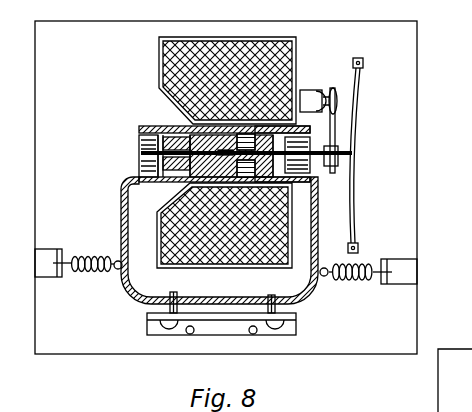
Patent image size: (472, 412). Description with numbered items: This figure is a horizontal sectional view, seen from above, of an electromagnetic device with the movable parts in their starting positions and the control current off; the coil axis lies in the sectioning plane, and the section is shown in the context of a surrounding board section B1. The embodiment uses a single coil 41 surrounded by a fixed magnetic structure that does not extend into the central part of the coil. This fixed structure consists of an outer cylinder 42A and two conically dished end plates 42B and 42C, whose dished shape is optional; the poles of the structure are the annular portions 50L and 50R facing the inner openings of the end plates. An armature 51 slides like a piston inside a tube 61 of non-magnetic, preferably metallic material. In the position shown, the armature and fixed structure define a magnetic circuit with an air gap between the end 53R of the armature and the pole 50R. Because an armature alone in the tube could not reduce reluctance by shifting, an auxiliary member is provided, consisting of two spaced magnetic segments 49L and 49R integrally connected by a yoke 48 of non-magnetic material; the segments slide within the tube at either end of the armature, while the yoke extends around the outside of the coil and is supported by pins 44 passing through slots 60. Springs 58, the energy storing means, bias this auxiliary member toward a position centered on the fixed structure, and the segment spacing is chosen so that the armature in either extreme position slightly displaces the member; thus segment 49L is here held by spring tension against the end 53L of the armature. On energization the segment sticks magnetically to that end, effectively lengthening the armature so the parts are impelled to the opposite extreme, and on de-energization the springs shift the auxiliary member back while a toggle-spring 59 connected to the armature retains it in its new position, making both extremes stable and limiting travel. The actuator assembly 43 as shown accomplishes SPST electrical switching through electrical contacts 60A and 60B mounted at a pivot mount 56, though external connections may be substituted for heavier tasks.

The coil 41 is at (226, 148).
The outer cylinder 42A is at (263, 38).
The dished end plate 42B is at (158, 93).
The dished end plate 42C is at (301, 89).
The actuator assembly 43 is at (103, 236).
The pins 44 is at (188, 334).
The yoke 48 is at (135, 300).
The segment 49L is at (142, 143).
The segment 49R is at (307, 173).
The pole 50L is at (188, 124).
The pole 50R is at (257, 130).
The armature 51 is at (138, 175).
The end of the armature 53L is at (190, 109).
The end of the armature 53R is at (316, 213).
The pivot mount 56 is at (316, 172).
The springs 58 is at (88, 272).
The toggle-spring 59 is at (366, 95).
The slots 60 is at (168, 303).
The electrical contact 60A is at (336, 97).
The electrical contact 60B is at (323, 88).
The tube 61 is at (147, 153).
The board section B1 is at (409, 132).